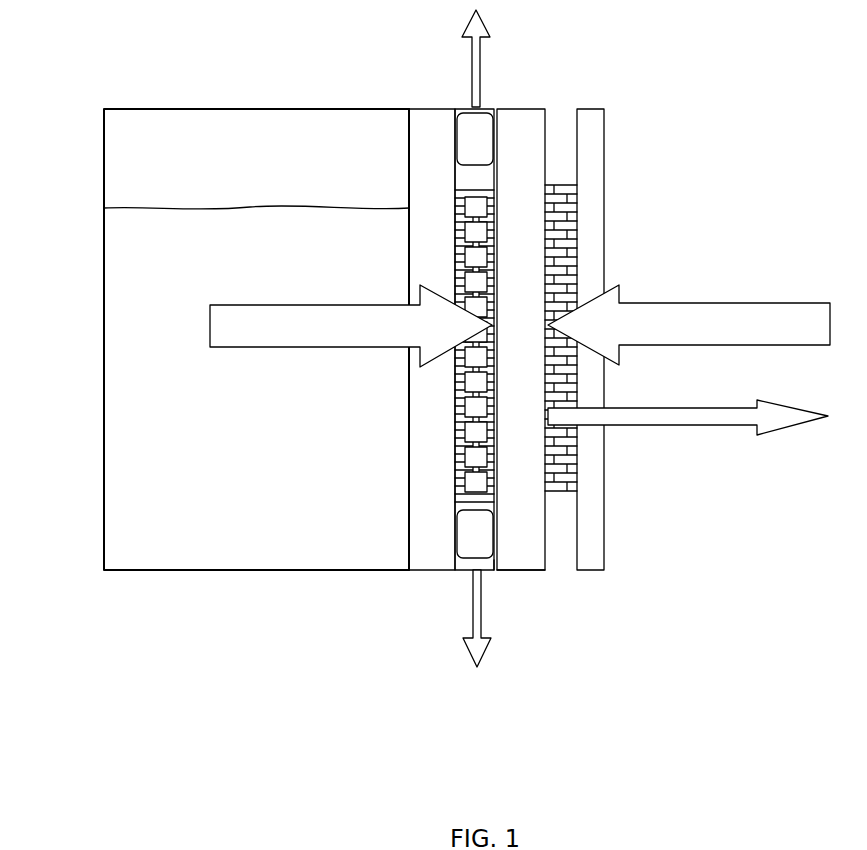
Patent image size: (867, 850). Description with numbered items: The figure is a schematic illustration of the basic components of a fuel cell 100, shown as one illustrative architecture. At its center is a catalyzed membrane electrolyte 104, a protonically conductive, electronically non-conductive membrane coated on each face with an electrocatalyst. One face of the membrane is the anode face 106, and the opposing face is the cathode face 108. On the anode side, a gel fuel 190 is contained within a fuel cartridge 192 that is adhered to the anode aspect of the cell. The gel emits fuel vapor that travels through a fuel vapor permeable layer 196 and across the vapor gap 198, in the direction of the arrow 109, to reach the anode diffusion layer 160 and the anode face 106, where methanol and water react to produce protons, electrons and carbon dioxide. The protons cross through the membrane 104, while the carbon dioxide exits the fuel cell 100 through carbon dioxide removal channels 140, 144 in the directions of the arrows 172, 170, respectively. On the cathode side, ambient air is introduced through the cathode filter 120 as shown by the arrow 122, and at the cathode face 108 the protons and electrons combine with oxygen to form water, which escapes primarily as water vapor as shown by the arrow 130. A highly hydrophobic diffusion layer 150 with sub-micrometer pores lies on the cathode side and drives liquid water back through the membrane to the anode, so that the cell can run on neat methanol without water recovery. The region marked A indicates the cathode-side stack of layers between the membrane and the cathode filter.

The fuel cell 100 is at (427, 361).
The catalyzed membrane electrolyte 104 is at (541, 96).
The anode face 106 is at (490, 572).
The cathode face 108 is at (550, 568).
The arrow 109 is at (240, 305).
The cathode filter 120 is at (604, 237).
The arrow 122 is at (758, 303).
The arrow 130 is at (698, 425).
The carbon dioxide removal channel 140 is at (478, 108).
The carbon dioxide removal channel 144 is at (465, 573).
The hydrophobic diffusion layer 150 is at (562, 184).
The anode diffusion layer 160 is at (457, 188).
The arrow 170 is at (469, 641).
The arrow 172 is at (457, 58).
The gel fuel 190 is at (211, 339).
The fuel cartridge 192 is at (132, 438).
The fuel vapor permeable layer 196 is at (408, 490).
The vapor gap 198 is at (432, 570).
The region A is at (576, 122).